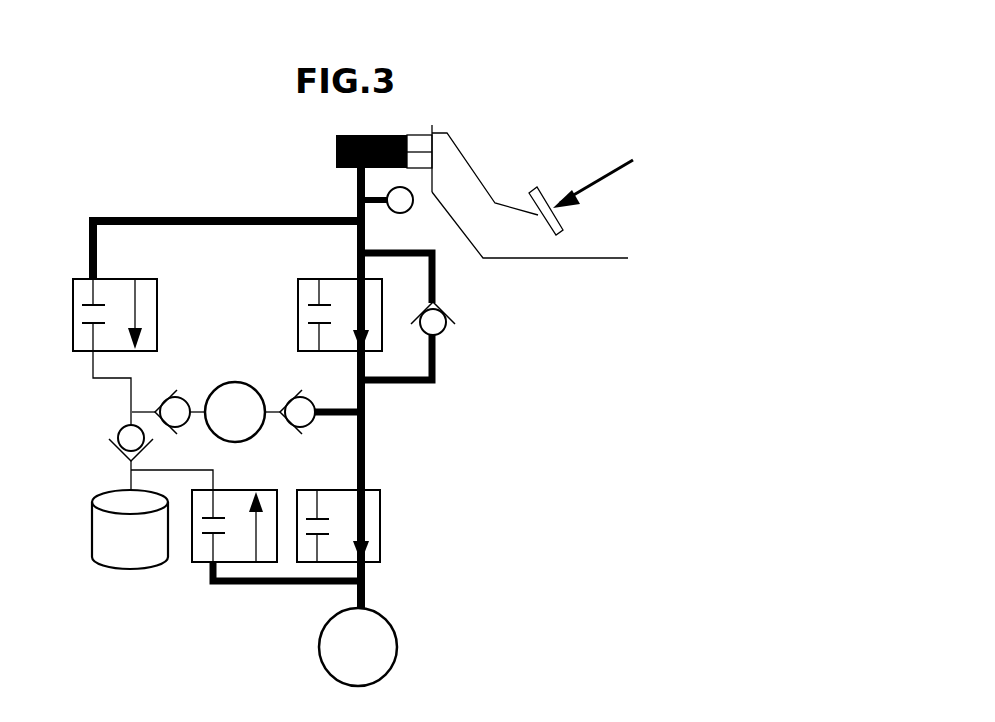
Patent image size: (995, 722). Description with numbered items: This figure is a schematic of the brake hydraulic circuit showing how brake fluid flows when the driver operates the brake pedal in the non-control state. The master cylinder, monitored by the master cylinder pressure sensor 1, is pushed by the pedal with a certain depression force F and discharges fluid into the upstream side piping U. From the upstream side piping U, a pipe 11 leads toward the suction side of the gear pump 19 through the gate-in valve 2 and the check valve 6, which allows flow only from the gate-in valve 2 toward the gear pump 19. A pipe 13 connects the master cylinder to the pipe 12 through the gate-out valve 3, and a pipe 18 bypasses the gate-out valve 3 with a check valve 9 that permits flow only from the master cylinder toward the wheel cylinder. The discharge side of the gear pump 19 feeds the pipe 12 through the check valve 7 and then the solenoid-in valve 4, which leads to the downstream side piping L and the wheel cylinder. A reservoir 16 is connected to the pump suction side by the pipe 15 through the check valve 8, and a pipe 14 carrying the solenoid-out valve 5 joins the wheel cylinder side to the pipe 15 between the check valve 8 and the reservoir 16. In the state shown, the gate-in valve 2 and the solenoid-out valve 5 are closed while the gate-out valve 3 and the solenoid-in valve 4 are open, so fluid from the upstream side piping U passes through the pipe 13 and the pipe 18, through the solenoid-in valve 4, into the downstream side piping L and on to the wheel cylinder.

The master cylinder pressure sensor 1 is at (400, 213).
The gate-in valve 2 is at (142, 278).
The gate-out valve 3 is at (310, 278).
The solenoid-in valve 4 is at (381, 510).
The solenoid-out valve 5 is at (196, 564).
The check valve 6 is at (158, 372).
The check valve 7 is at (278, 375).
The check valve 8 is at (108, 418).
The check valve 9 is at (462, 305).
The pipe 11 is at (131, 216).
The pipe 12 is at (335, 417).
The pipe 13 is at (366, 457).
The pipe 14 is at (185, 469).
The pipe 15 is at (127, 465).
The reservoir 16 is at (92, 523).
The pipe 18 is at (436, 270).
The gear pump 19 is at (233, 381).
The upstream side piping U is at (357, 181).
The downstream side piping L is at (364, 592).
The depression force F is at (602, 175).